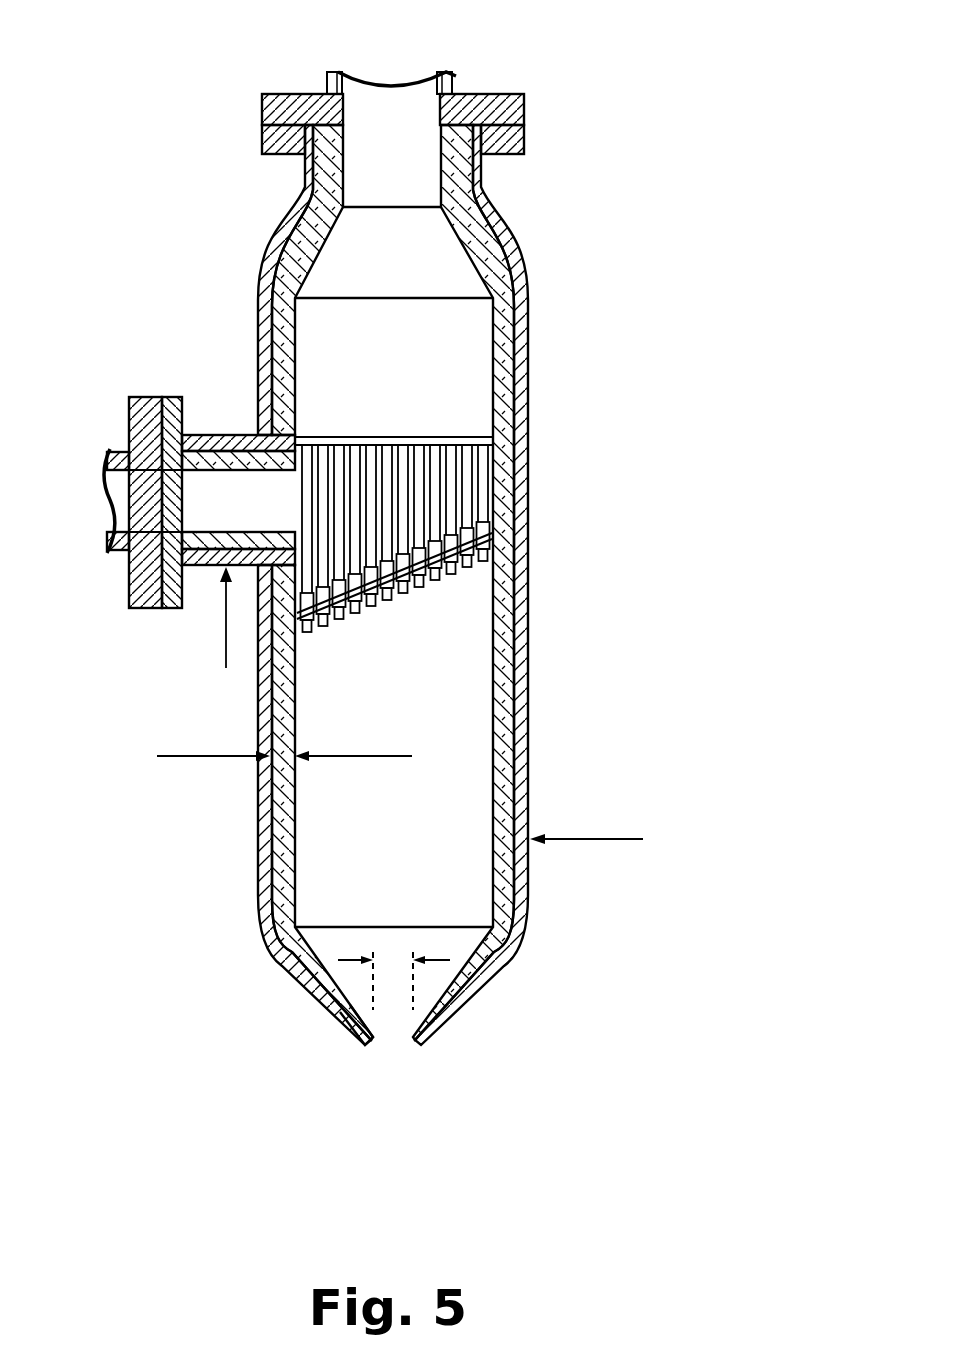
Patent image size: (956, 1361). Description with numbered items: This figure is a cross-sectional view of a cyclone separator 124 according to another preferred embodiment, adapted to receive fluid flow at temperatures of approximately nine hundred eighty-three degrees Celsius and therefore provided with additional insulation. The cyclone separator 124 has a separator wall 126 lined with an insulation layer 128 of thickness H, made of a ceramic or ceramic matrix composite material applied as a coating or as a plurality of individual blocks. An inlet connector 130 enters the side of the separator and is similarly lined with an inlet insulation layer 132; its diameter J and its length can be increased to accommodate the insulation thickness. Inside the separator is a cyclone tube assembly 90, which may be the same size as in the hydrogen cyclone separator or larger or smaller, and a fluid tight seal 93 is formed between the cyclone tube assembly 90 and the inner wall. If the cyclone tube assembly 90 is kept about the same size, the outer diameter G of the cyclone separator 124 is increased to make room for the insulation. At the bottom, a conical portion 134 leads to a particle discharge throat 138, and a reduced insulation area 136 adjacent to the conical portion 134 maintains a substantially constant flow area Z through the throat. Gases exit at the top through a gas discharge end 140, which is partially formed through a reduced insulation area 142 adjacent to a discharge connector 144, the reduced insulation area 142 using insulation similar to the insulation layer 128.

The cyclone separator 124 is at (664, 329).
The separator wall 126 is at (530, 732).
The insulation layer 128 is at (503, 375).
The fluid tight seal 93 is at (484, 422).
The cyclone tube assembly 90 is at (468, 497).
The inlet connector 130 is at (222, 435).
The inlet insulation layer 132 is at (223, 540).
The conical portion 134 is at (350, 1028).
The reduced insulation area 136 is at (350, 1017).
The particle discharge throat 138 is at (390, 1038).
The gas discharge end 140 is at (388, 170).
The reduced insulation area 142 is at (453, 160).
The discharge connector 144 is at (523, 138).